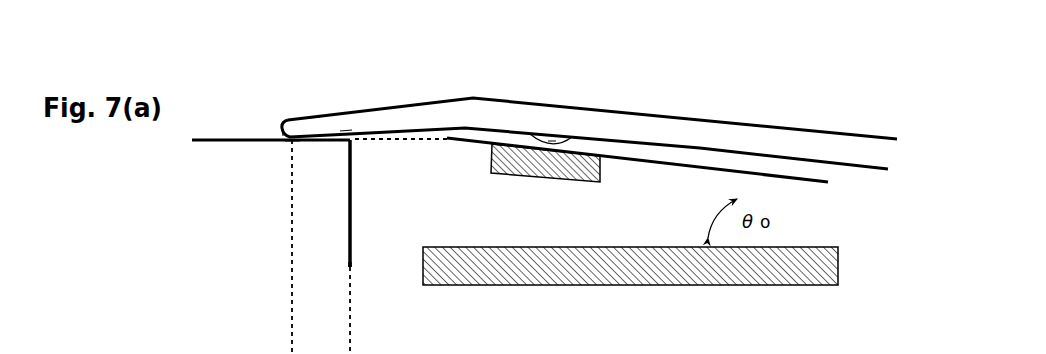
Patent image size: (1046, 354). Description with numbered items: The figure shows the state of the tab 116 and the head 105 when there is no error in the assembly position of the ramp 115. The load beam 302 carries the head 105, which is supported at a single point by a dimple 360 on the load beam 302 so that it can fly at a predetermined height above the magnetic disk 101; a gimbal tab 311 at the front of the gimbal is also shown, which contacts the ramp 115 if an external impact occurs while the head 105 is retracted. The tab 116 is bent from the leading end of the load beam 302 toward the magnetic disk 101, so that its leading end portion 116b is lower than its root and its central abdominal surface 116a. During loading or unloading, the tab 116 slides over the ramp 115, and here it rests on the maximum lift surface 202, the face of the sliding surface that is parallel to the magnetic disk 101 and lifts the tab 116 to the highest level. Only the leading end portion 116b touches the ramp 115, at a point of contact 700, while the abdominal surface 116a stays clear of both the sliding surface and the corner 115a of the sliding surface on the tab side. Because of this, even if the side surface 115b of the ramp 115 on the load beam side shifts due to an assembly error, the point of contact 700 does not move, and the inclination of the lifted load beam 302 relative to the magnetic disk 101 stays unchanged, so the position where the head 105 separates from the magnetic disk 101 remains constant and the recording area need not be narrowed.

The magnetic disk 101 is at (763, 282).
The head 105 is at (550, 143).
The ramp 115 is at (296, 234).
The corner of the sliding surface 115a is at (342, 148).
The side surface of the ramp 115b is at (353, 257).
The tab 116 is at (318, 118).
The abdominal surface 116a is at (345, 128).
The leading end portion 116b is at (282, 137).
The maximum lift surface 202 is at (207, 137).
The load beam 302 is at (693, 108).
The gimbal tab 311 is at (640, 160).
The dimple 360 is at (543, 133).
The point of contact 700 is at (293, 147).